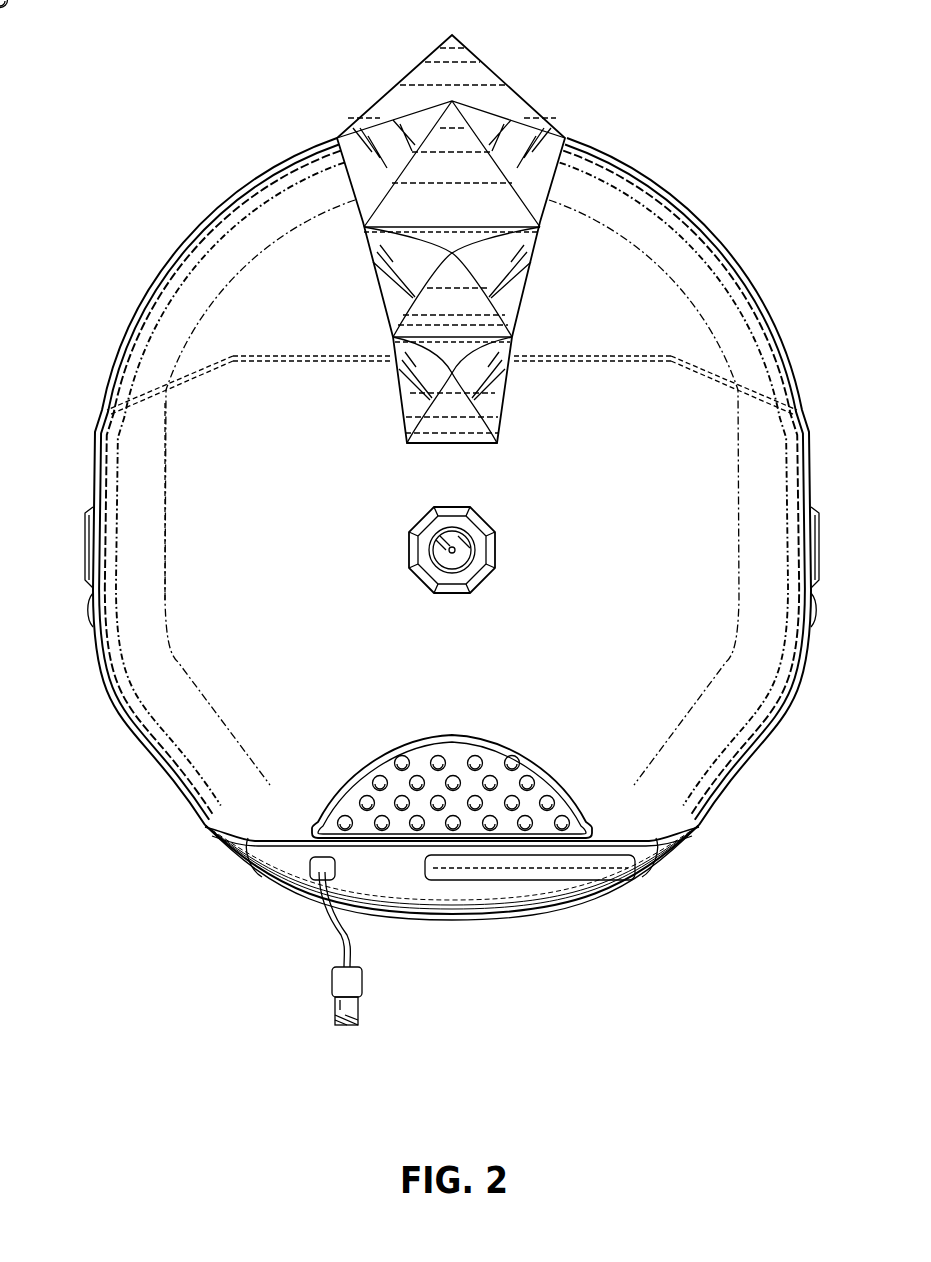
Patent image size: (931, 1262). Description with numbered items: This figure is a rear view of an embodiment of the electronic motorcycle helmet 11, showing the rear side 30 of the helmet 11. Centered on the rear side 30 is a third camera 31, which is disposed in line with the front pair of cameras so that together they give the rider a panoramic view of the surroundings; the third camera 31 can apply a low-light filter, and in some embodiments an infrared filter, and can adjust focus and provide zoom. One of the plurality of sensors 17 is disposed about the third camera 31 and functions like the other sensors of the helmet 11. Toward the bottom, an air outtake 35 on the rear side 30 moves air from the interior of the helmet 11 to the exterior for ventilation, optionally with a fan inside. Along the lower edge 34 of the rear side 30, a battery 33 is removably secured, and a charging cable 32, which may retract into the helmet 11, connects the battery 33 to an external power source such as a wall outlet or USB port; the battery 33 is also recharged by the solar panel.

The helmet 11 is at (92, 80).
The sensor 17 is at (443, 513).
The rear side 30 is at (203, 478).
The third camera 31 is at (440, 555).
The charging cable 32 is at (333, 1008).
The battery 33 is at (620, 897).
The lower edge 34 is at (517, 892).
The air outtake 35 is at (492, 753).